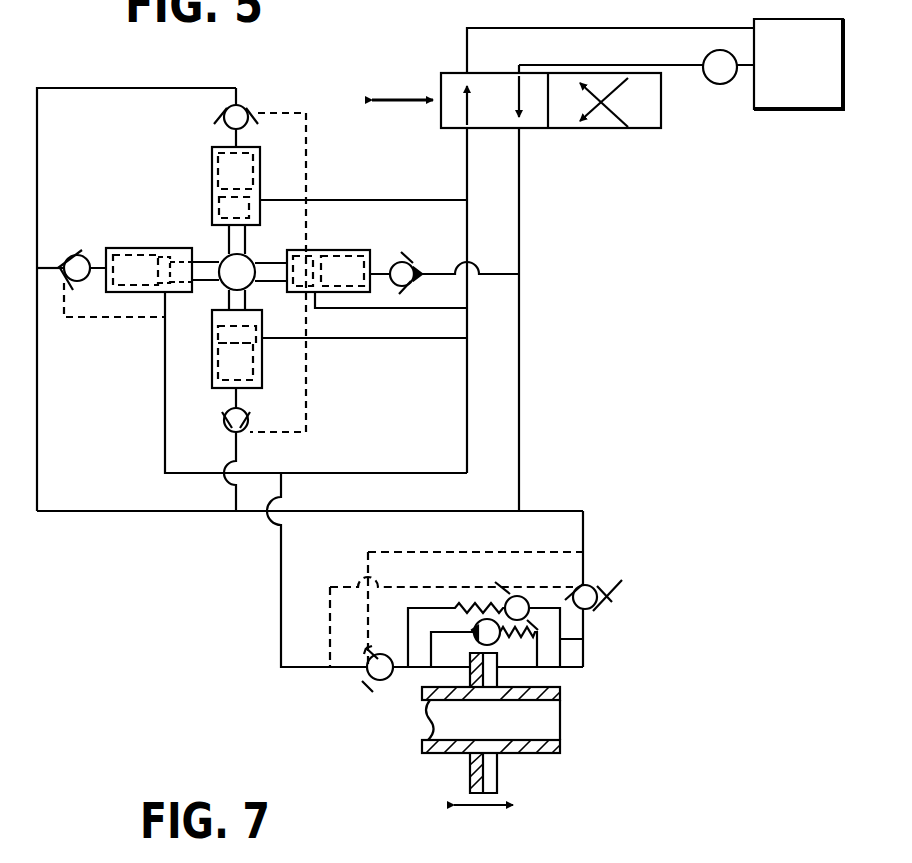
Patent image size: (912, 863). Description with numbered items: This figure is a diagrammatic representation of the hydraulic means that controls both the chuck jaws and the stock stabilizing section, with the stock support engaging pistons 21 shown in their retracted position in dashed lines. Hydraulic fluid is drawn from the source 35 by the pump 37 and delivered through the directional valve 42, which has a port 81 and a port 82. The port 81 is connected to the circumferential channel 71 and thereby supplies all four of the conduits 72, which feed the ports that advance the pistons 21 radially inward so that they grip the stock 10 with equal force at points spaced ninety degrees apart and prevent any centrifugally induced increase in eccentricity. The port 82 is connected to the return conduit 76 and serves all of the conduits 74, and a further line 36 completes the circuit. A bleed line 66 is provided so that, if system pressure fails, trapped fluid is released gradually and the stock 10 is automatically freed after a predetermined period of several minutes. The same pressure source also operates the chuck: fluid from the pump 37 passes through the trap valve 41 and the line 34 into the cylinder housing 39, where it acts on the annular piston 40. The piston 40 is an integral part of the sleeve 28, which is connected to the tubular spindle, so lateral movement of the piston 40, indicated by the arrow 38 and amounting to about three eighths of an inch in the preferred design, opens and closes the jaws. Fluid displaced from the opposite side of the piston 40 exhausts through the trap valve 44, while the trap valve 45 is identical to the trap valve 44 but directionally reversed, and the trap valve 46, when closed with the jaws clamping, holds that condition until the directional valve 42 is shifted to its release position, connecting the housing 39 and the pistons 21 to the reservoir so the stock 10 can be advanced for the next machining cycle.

The stock 10 is at (257, 262).
The stock support engaging pistons 21 is at (204, 262).
The sleeve 28 is at (518, 748).
The line 34 is at (607, 27).
The source 35 is at (773, 110).
The hydraulic line 36 is at (520, 261).
The pump 37 is at (727, 85).
The direction of movement 38 is at (503, 824).
The cylinder housing 39 is at (505, 767).
The piston 40 is at (470, 770).
The trap valve 41 is at (610, 584).
The directional valve 42 is at (648, 128).
The trap valve 44 is at (508, 595).
The trap valve 45 is at (482, 641).
The trap valve 46 is at (371, 684).
The bleed line 66 is at (258, 113).
The circumferential channel 71 is at (178, 513).
The conduits 72 is at (233, 133).
The conduits 74 is at (383, 200).
The conduit 76 is at (467, 170).
The port 81 is at (520, 132).
The port 82 is at (467, 130).